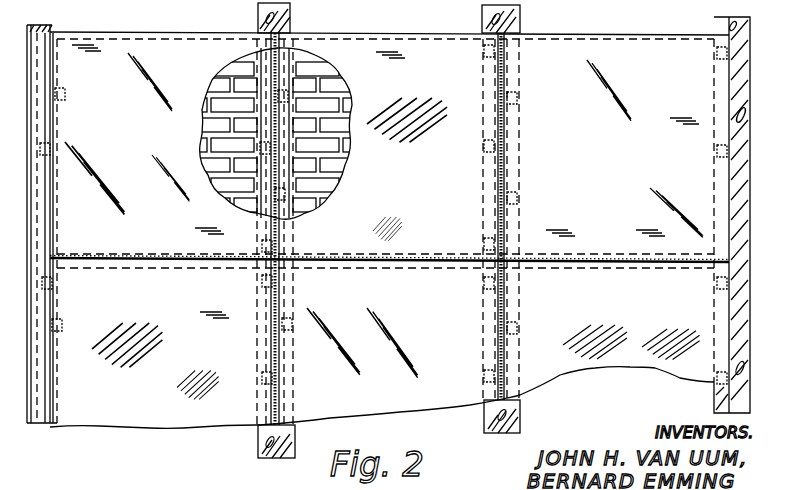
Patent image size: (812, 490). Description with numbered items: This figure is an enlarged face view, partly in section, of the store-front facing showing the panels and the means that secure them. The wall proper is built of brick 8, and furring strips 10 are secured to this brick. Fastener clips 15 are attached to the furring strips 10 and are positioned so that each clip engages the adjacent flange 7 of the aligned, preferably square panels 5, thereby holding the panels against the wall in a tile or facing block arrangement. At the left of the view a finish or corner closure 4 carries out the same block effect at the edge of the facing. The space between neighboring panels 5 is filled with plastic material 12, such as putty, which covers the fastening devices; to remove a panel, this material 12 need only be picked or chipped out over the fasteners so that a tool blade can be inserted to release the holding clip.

The corner closure 4 is at (31, 61).
The panels 5 is at (182, 45).
The flange 7 is at (270, 191).
The brick 8 is at (218, 128).
The furring strips 10 is at (291, 21).
The plastic material 12 is at (51, 83).
The fastener clips 15 is at (292, 98).